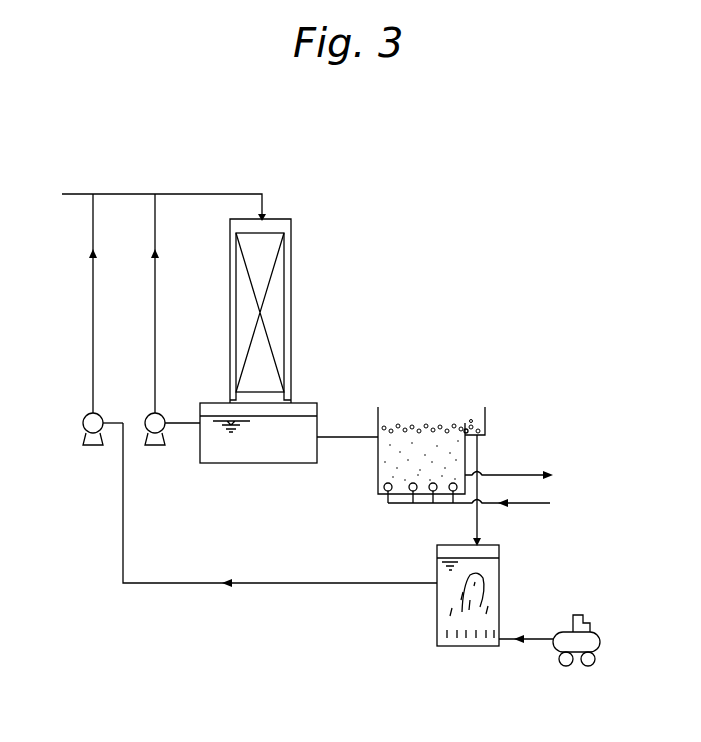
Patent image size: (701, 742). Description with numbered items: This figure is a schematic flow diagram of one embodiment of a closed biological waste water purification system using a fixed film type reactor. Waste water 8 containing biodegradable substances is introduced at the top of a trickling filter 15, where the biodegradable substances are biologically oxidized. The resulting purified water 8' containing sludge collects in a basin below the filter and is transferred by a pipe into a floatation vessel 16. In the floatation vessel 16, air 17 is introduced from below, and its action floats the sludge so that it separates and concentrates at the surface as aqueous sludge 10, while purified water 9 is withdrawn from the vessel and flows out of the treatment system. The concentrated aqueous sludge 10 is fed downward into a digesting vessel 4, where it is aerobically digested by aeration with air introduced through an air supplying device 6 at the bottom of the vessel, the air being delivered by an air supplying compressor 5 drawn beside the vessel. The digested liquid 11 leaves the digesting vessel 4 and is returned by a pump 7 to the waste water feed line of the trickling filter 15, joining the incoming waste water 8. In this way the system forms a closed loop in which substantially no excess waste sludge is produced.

The digesting vessel 4 is at (499, 585).
The air supplying compressor 5 is at (600, 640).
The air supplying device 6 is at (467, 646).
The pump 7 is at (90, 447).
The waste water 8 is at (153, 297).
The purified water containing sludge 8' is at (347, 403).
The purified water 9 is at (519, 476).
The aqueous concentrated sludge 10 is at (470, 420).
The digested liquid 11 is at (274, 583).
The trickling filter 15 is at (291, 245).
The floatation vessel 16 is at (378, 467).
The air 17 is at (482, 500).